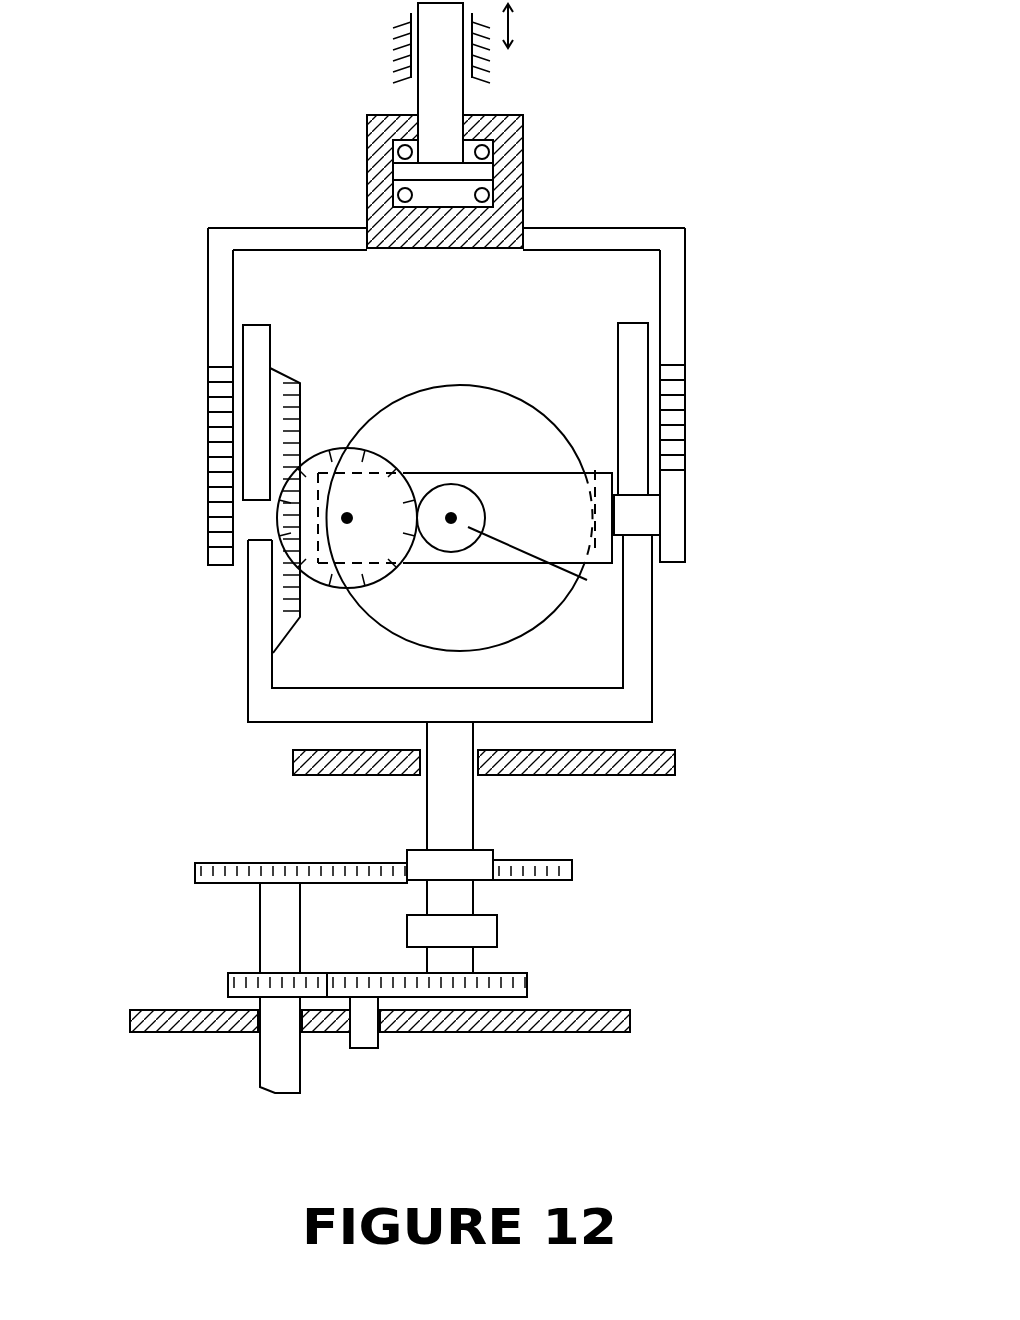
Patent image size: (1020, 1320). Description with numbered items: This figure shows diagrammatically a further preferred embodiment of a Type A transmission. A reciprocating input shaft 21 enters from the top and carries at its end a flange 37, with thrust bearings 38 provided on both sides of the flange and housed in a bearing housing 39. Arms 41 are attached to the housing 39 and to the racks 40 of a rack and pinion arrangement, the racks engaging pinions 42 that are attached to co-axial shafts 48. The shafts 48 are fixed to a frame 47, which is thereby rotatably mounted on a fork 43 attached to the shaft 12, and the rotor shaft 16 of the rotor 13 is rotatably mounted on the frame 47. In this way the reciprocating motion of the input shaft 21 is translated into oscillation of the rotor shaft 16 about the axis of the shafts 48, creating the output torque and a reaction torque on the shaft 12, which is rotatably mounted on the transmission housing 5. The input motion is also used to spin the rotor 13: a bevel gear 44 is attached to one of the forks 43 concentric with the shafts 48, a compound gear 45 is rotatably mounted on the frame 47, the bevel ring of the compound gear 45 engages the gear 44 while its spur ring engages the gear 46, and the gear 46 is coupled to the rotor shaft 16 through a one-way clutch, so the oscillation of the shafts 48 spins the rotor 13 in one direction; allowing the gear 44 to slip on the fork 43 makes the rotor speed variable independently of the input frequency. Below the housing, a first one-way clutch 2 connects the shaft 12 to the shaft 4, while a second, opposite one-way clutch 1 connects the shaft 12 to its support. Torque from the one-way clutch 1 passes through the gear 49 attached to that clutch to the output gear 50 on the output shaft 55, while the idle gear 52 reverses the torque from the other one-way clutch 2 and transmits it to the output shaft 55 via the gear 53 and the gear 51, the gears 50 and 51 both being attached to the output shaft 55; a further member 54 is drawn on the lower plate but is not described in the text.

The one-way clutch 1 is at (500, 849).
The one-way clutch 2 is at (482, 930).
The shaft 4 is at (477, 960).
The transmission housing 5 is at (652, 750).
The shaft 12 is at (437, 802).
The rotor 13 is at (470, 390).
The rotor shaft 16 is at (452, 518).
The input shaft 21 is at (450, 114).
The flange 37 is at (493, 168).
The thrust bearings 38 is at (490, 192).
The thrust bearing housing 39 is at (527, 115).
The racks 40 is at (673, 297).
The arms 41 is at (280, 227).
The pinions 42 is at (640, 522).
The fork 43 is at (253, 343).
The bevel gear 44 is at (280, 415).
The compound gear 45 is at (303, 617).
The gear 46 is at (587, 580).
The frame 47 is at (540, 492).
The shafts 48 is at (668, 513).
The gear 49 is at (573, 863).
The output gear 50 is at (242, 863).
The gear 51 is at (230, 970).
The idle gear 52 is at (368, 968).
The gear 53 is at (523, 980).
The shaft stub 54 is at (368, 1035).
The output shaft 55 is at (272, 1055).